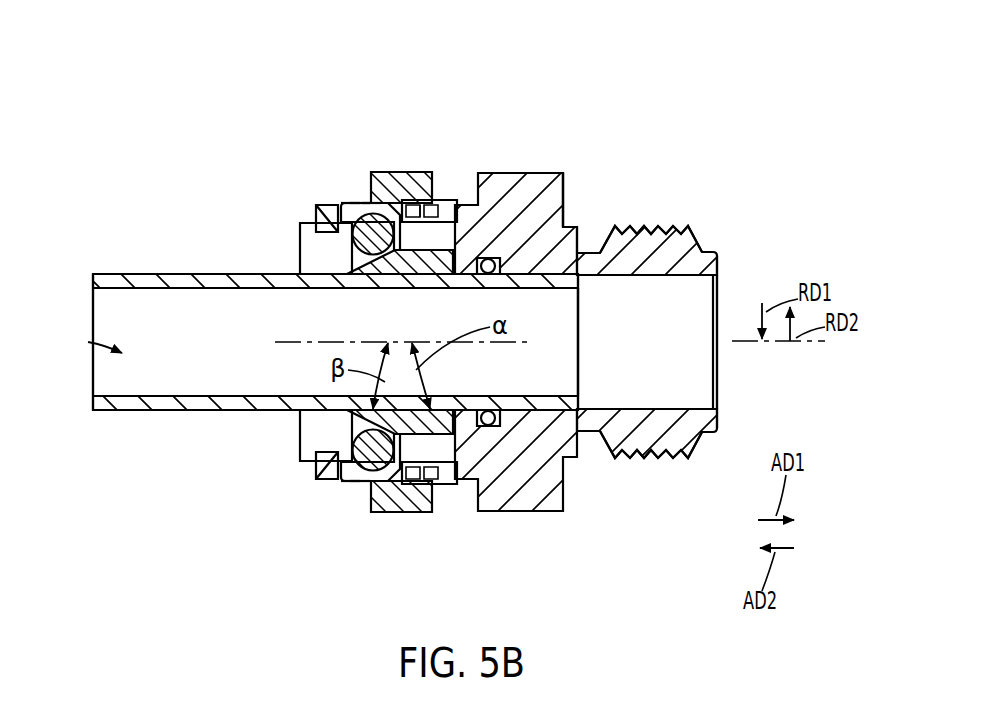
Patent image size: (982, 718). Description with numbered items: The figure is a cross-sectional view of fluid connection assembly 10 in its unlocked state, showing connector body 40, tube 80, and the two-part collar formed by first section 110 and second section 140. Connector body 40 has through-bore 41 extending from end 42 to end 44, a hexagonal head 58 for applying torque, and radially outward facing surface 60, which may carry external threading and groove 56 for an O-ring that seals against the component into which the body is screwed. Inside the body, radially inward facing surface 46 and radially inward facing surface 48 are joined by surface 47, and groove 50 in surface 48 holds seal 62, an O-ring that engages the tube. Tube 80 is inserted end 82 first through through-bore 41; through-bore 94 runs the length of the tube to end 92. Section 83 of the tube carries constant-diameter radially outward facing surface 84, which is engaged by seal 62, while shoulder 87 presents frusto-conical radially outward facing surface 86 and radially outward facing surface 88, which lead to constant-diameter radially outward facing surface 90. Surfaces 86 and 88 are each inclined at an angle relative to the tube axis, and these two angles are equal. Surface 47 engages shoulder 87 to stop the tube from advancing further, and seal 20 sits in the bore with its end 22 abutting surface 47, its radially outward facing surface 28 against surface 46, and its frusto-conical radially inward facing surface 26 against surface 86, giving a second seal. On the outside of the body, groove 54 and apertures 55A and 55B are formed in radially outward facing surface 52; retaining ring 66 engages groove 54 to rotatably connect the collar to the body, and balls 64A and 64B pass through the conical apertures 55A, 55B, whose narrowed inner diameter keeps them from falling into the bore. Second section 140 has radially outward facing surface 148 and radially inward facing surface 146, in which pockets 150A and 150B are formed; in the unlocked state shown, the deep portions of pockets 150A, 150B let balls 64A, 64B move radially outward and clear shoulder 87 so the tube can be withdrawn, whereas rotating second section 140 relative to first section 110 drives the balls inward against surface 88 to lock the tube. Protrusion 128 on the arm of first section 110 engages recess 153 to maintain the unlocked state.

The fluid connection assembly 10 is at (216, 104).
The seal 20 is at (451, 409).
The end 22 is at (500, 218).
The radially inward facing surface 26 is at (425, 204).
The radially outward facing surface 28 is at (456, 212).
The connector body 40 is at (684, 247).
The through-bore 41 is at (692, 355).
The end 42 is at (720, 257).
The end 44 is at (299, 230).
The radially inward facing surface 46 is at (304, 442).
The surface 47 is at (459, 436).
The radially inward facing surface 48 is at (661, 434).
The groove 50 is at (548, 242).
The radially outward facing surface 52 is at (317, 222).
The groove 54 is at (320, 462).
The aperture 55A is at (342, 204).
The aperture 55B is at (331, 482).
The groove 56 is at (579, 255).
The head 58 is at (541, 230).
The radially outward facing surface 60 is at (661, 230).
The seal 62 is at (494, 259).
The ball 64A is at (352, 240).
The ball 64B is at (369, 472).
The retaining ring 66 is at (341, 211).
The tube 80 is at (137, 272).
The end 82 is at (580, 331).
The section 83 is at (546, 413).
The radially outward facing surface 84 is at (577, 333).
The radially outward facing surface 86 is at (452, 286).
The shoulder 87 is at (451, 442).
The radially outward facing surface 88 is at (374, 286).
The radially outward facing surface 90 is at (170, 272).
The end 92 is at (92, 280).
The through-bore 94 is at (92, 341).
The first section 110 is at (453, 171).
The protrusion 128 is at (405, 204).
The second section 140 is at (420, 170).
The radially inward facing surface 146 is at (430, 482).
The radially outward facing surface 148 is at (399, 482).
The pocket 150A is at (358, 202).
The pocket 150B is at (343, 482).
The recess 153 is at (367, 202).